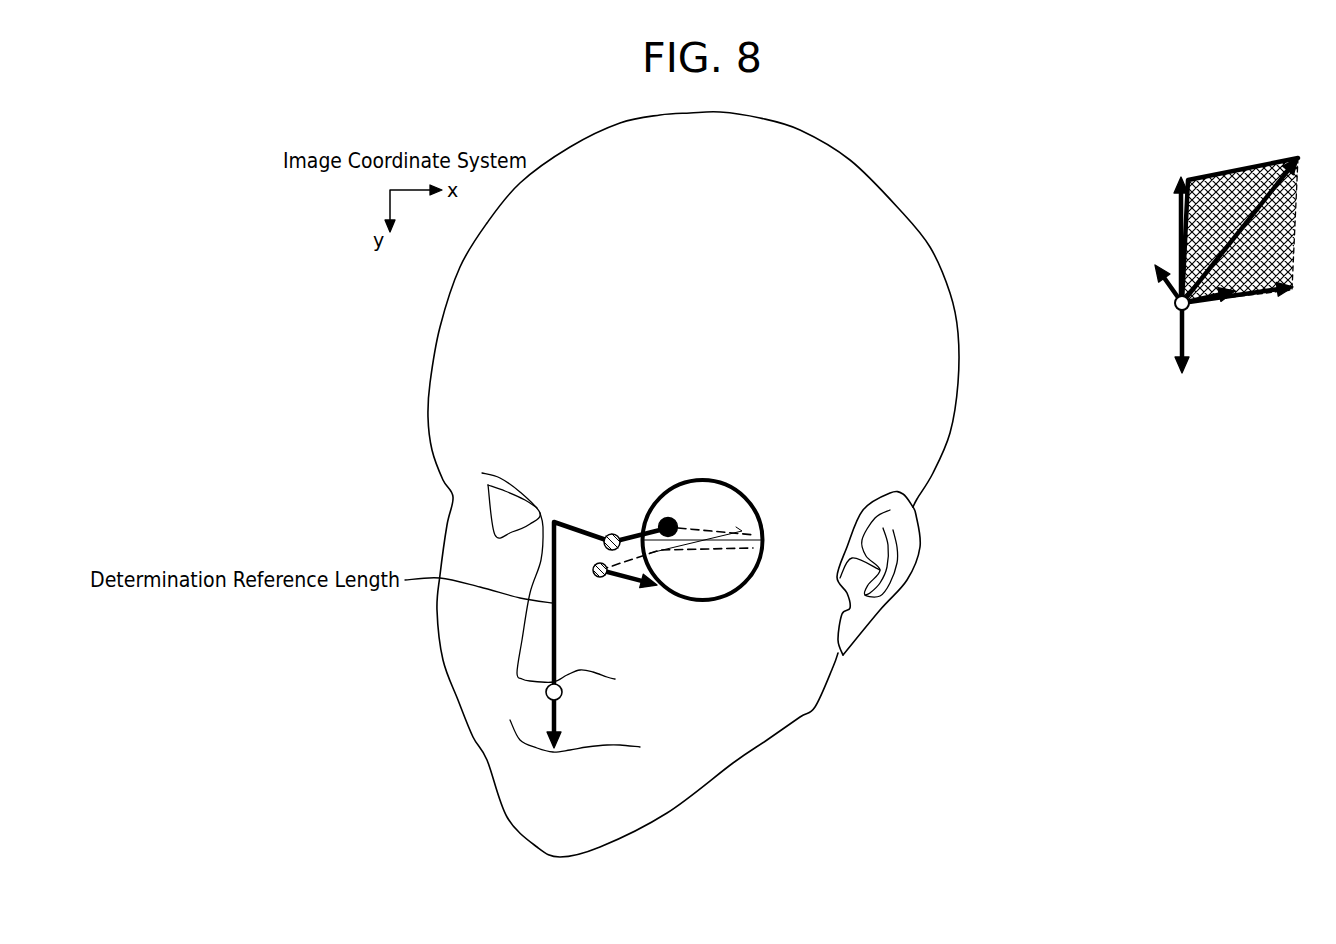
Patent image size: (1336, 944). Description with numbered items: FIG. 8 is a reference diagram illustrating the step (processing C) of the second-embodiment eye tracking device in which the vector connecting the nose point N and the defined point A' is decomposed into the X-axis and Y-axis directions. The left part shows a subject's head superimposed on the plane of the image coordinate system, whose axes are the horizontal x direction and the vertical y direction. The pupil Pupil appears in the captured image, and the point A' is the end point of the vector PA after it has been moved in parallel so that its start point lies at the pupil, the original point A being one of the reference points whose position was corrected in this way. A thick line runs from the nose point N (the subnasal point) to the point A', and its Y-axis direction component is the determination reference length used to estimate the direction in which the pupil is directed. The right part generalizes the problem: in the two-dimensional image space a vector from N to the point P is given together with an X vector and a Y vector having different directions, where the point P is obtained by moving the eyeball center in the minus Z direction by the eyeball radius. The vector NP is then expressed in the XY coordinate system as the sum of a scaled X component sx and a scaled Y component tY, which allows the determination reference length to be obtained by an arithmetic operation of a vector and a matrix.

The point A is at (602, 595).
The point A' is at (611, 516).
The pupil Pupil is at (670, 517).
The x axis of the image coordinate system x is at (628, 591).
The y axis of the image coordinate system y is at (552, 739).
The nose point N is at (1119, 311).
The point P is at (1247, 219).
The X vector X is at (1212, 308).
The Y vector Y is at (1181, 354).
The Z direction Z is at (1165, 273).
The tY vector tY is at (1170, 229).
The sX vector sx is at (1240, 297).